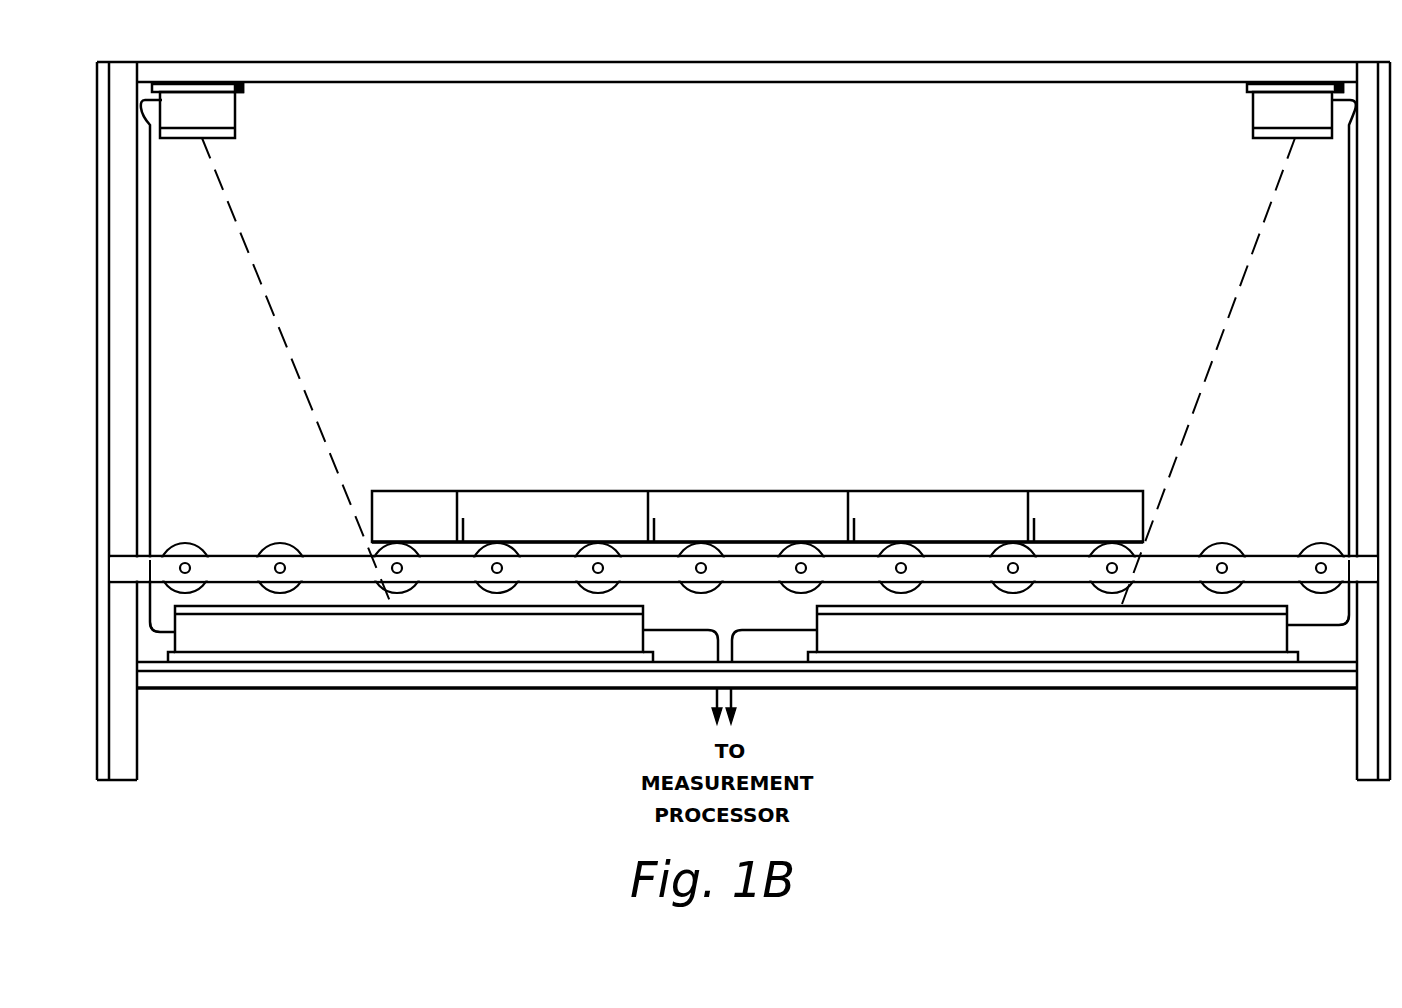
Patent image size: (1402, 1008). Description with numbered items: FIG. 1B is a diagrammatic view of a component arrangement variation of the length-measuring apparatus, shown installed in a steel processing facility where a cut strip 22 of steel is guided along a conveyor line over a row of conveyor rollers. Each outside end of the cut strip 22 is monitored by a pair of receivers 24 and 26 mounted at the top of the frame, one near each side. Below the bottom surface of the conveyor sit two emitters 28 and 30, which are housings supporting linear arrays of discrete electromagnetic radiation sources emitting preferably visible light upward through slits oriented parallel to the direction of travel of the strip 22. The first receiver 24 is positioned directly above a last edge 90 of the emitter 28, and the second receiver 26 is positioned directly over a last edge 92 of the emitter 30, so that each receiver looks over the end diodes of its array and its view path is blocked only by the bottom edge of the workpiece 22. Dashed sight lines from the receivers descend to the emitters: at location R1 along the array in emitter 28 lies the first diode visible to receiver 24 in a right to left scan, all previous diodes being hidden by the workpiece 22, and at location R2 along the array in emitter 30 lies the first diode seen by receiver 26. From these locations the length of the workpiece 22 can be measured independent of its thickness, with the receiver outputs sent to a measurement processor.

The cut strip 22 is at (615, 502).
The receiver 24 is at (222, 110).
The receiver 26 is at (1278, 108).
The emitter 28 is at (322, 633).
The emitter 30 is at (1008, 633).
The last edge 90 is at (198, 607).
The last edge 92 is at (1263, 605).
The location R1 is at (393, 612).
The location R2 is at (1121, 612).